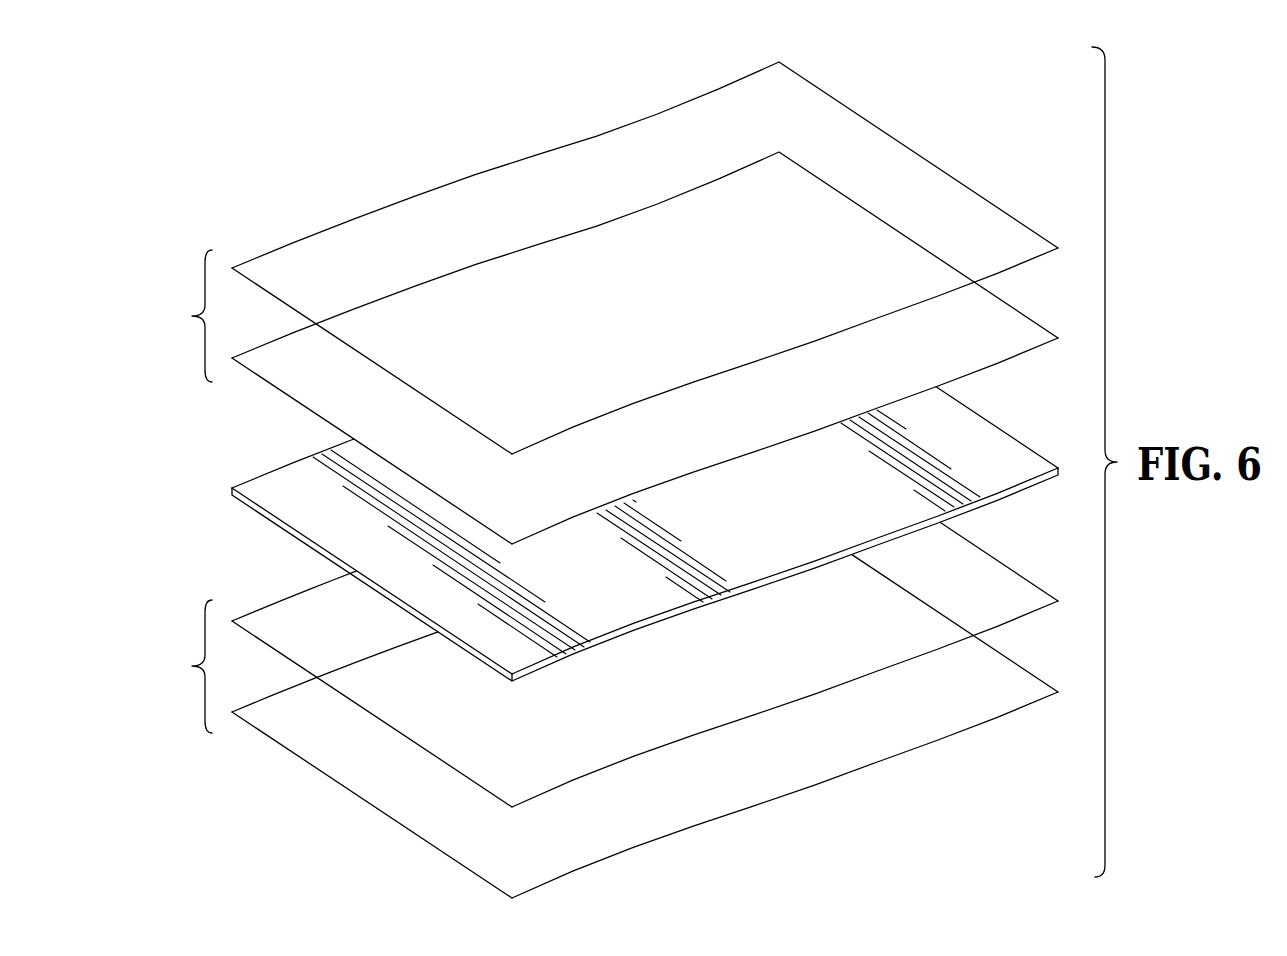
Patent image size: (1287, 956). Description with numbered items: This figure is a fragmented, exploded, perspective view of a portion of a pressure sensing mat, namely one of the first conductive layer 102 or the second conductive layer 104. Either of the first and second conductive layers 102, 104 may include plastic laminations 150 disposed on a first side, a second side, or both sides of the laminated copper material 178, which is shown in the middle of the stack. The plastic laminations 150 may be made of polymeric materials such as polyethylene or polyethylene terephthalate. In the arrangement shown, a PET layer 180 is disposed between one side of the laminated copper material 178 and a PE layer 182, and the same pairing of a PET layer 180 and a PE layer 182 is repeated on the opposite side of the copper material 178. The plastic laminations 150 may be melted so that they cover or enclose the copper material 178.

The first conductive layer 102 is at (278, 98).
The second conductive layer 104 is at (278, 98).
The plastic laminations 150 is at (179, 491).
The laminated copper material 178 is at (298, 496).
The PET layer 180 is at (298, 384).
The PE layer 182 is at (490, 185).